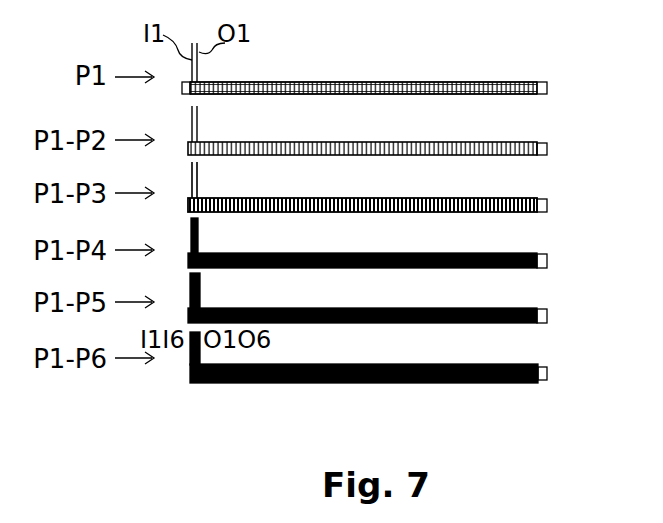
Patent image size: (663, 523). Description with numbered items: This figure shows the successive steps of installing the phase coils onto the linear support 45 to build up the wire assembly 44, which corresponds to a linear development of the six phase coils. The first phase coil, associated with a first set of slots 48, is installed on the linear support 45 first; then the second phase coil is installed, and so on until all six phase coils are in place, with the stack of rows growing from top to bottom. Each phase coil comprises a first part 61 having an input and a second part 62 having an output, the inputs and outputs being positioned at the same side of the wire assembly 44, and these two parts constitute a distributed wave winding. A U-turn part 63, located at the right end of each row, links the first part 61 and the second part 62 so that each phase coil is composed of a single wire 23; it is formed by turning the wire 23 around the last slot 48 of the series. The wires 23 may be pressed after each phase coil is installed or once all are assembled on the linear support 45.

The wire 23 is at (390, 82).
The wire assembly 44 is at (500, 400).
The linear support 45 is at (182, 88).
The slot 48 is at (548, 87).
The first part 61 is at (296, 82).
The second part 62 is at (293, 95).
The U-turn part 63 is at (547, 73).